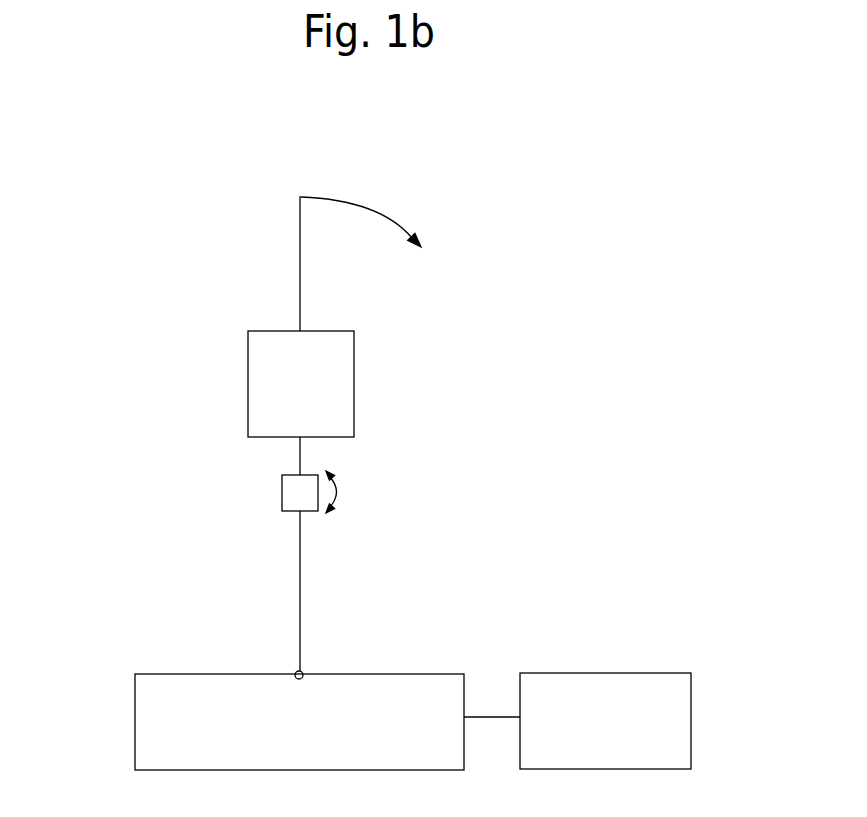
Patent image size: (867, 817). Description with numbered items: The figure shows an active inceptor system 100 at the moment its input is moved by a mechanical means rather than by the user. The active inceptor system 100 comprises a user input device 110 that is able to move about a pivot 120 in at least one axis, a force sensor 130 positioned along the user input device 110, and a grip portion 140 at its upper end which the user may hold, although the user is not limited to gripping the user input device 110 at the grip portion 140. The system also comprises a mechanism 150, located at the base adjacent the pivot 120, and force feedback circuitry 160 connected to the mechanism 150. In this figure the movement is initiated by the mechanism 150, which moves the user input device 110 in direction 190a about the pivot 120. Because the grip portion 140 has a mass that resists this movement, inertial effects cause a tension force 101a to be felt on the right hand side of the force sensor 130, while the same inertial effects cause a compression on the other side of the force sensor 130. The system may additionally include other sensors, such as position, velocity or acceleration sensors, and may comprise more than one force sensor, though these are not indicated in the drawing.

The active inceptor system 100 is at (102, 158).
The user input device 110 is at (300, 541).
The pivot 120 is at (303, 673).
The force sensor 130 is at (282, 494).
The grip portion 140 is at (318, 392).
The mechanism 150 is at (317, 732).
The force feedback circuitry 160 is at (622, 731).
The direction 190a is at (372, 207).
The tension force 101a is at (338, 490).